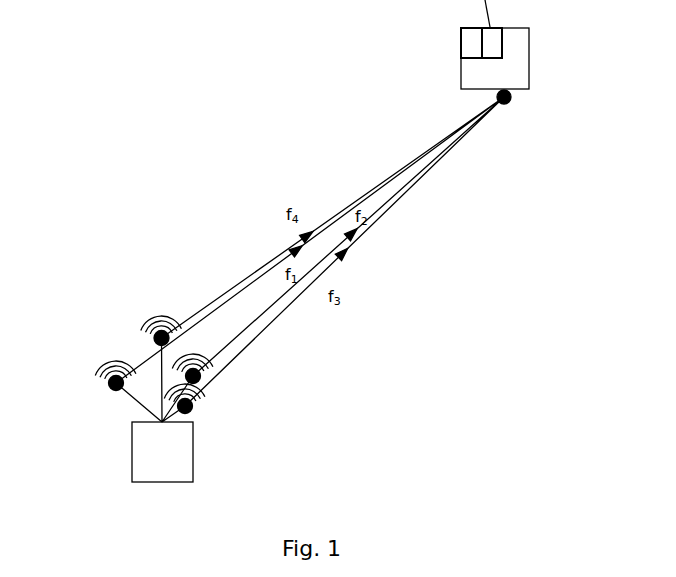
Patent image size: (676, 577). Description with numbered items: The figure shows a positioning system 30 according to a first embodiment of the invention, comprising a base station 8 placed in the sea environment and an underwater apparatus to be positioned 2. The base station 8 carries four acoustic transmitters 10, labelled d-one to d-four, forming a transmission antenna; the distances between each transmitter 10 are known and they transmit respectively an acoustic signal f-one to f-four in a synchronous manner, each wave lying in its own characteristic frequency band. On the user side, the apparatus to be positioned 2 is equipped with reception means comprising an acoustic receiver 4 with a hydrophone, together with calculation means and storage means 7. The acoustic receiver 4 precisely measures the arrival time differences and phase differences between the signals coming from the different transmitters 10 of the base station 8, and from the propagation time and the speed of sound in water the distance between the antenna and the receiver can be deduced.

The apparatus to be positioned 2 is at (529, 42).
The storage means 7 is at (461, 32).
The acoustic receiver 4 is at (508, 103).
The positioning system 30 is at (196, 132).
The base station 8 is at (137, 473).
The transmitter 10 is at (154, 338).